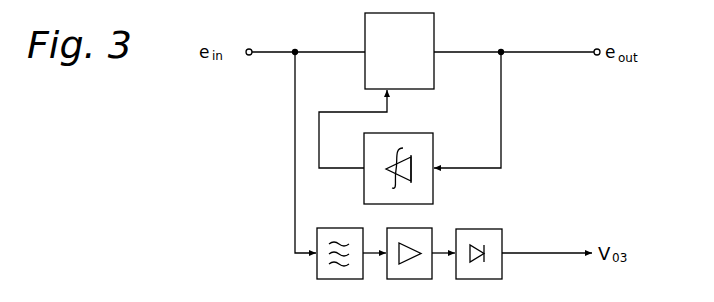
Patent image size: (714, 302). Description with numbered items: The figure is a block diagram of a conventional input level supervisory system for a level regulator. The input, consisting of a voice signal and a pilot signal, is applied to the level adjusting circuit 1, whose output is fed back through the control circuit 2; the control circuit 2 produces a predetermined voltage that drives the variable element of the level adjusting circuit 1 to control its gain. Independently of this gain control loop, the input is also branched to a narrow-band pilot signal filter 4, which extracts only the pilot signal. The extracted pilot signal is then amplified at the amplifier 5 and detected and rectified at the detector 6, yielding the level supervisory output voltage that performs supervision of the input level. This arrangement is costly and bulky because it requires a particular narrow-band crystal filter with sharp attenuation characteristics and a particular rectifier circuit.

The level adjusting circuit 1 is at (435, 19).
The control circuit 2 is at (434, 142).
The pilot signal filter 4 is at (338, 228).
The amplifier 5 is at (428, 228).
The detector 6 is at (483, 229).